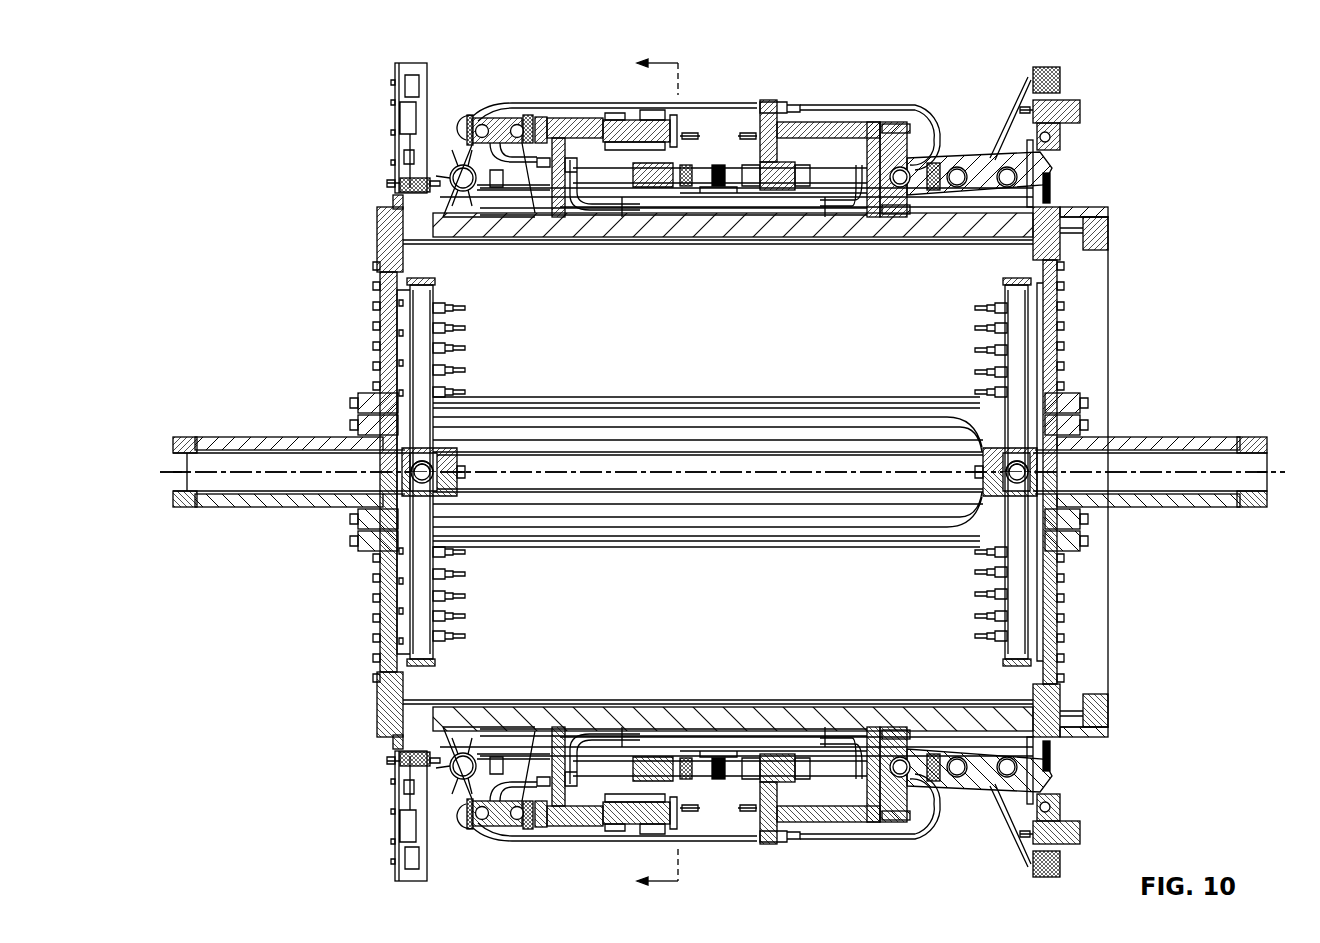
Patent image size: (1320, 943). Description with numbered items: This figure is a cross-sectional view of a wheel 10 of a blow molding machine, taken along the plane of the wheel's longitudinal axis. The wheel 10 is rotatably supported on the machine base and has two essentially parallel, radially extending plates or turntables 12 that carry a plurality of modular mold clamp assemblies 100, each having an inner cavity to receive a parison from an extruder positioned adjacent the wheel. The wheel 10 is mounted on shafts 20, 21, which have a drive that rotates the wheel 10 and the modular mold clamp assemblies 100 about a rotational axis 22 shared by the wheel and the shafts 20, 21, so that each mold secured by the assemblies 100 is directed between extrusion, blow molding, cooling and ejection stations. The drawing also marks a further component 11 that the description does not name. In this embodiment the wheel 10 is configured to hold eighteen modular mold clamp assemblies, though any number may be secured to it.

The wheel 10 is at (300, 78).
The section line for FIG. 11 is at (644, 474).
The radially extending plates or turntables 12 is at (1098, 292).
The shaft 20 is at (1256, 506).
The shaft 21 is at (194, 440).
The rotational axis 22 is at (1194, 468).
The modular mold clamp assembly 100 is at (828, 104).